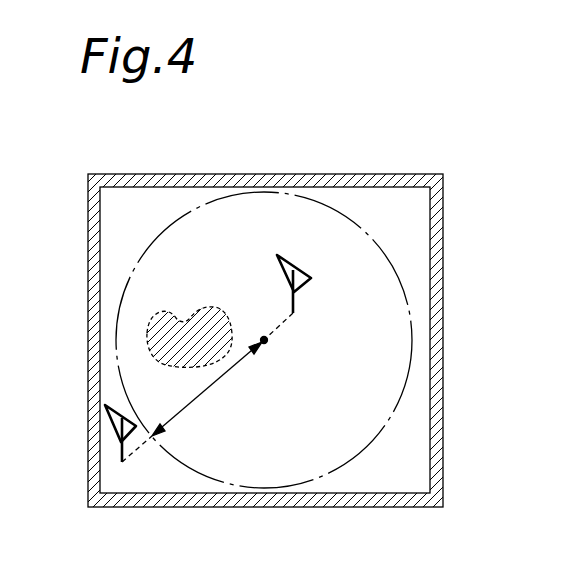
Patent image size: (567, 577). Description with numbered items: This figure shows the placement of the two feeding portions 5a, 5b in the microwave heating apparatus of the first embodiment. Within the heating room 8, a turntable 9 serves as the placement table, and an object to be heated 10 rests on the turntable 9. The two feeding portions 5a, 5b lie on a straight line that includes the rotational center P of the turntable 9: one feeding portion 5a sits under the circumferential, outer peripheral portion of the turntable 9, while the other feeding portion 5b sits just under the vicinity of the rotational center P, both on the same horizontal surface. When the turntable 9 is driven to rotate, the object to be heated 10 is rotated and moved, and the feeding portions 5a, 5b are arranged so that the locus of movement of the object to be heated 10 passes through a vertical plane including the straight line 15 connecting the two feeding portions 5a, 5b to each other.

The heating room 8 is at (170, 184).
The turntable 9 is at (360, 452).
The object to be heated 10 is at (162, 320).
The feeding portion 5a is at (117, 432).
The feeding portion 5b is at (305, 283).
The rotational center P is at (268, 346).
The straight line 15 is at (218, 380).